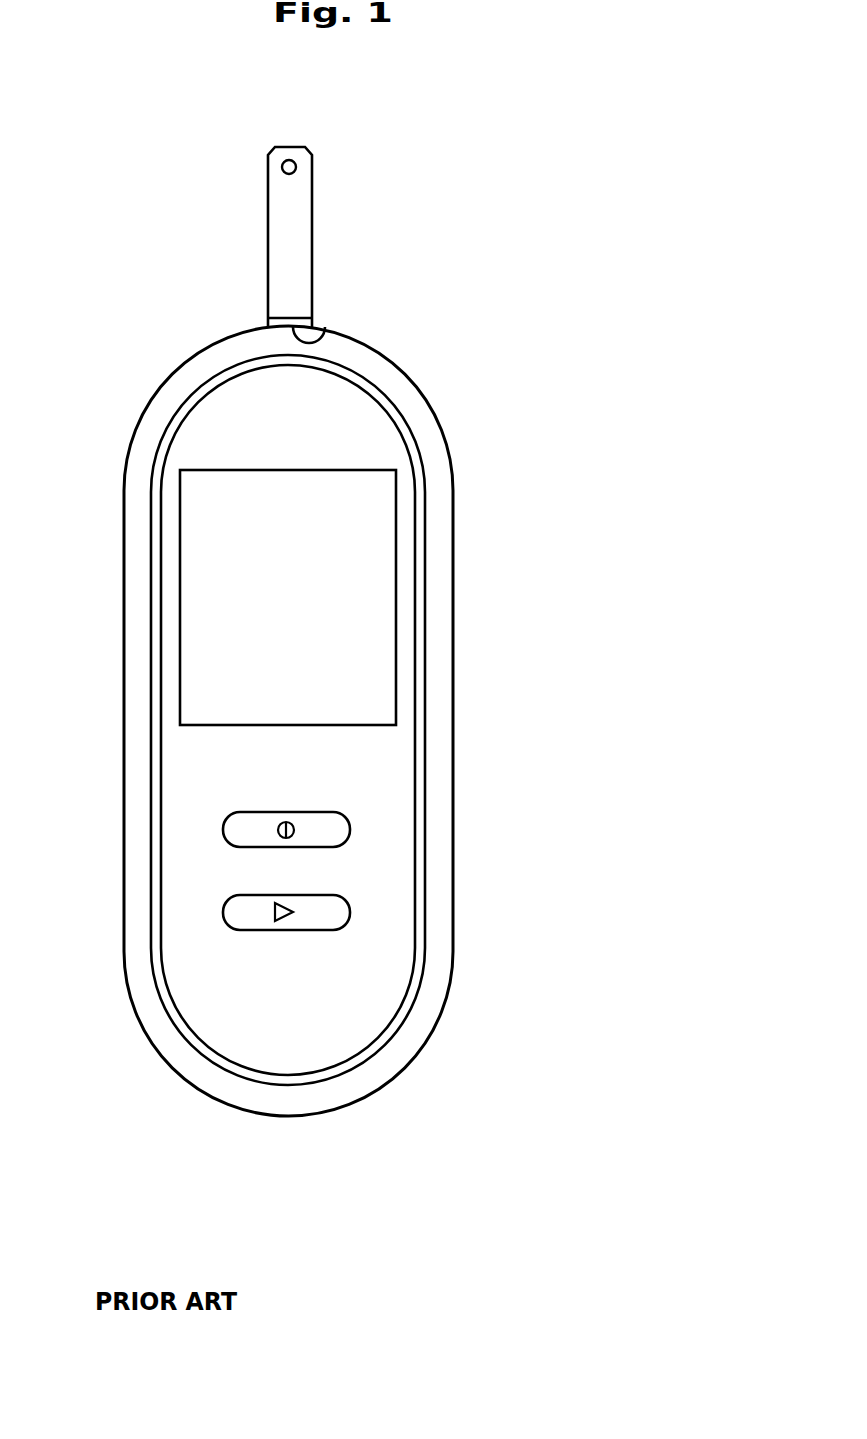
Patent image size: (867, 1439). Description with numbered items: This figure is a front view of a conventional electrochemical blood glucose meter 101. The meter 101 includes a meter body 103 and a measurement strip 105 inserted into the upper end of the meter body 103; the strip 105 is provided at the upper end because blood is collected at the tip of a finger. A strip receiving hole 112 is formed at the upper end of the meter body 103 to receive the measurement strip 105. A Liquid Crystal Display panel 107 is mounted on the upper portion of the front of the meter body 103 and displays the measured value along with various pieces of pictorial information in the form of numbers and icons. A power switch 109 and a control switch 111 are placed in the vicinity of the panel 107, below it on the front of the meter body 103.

The electrochemical blood glucose meter 101 is at (524, 401).
The meter body 103 is at (433, 638).
The measurement strip 105 is at (290, 238).
The Liquid Crystal Display (LCD) panel 107 is at (207, 602).
The power switch 109 is at (325, 832).
The control switch 111 is at (325, 915).
The strip receiving hole 112 is at (325, 330).